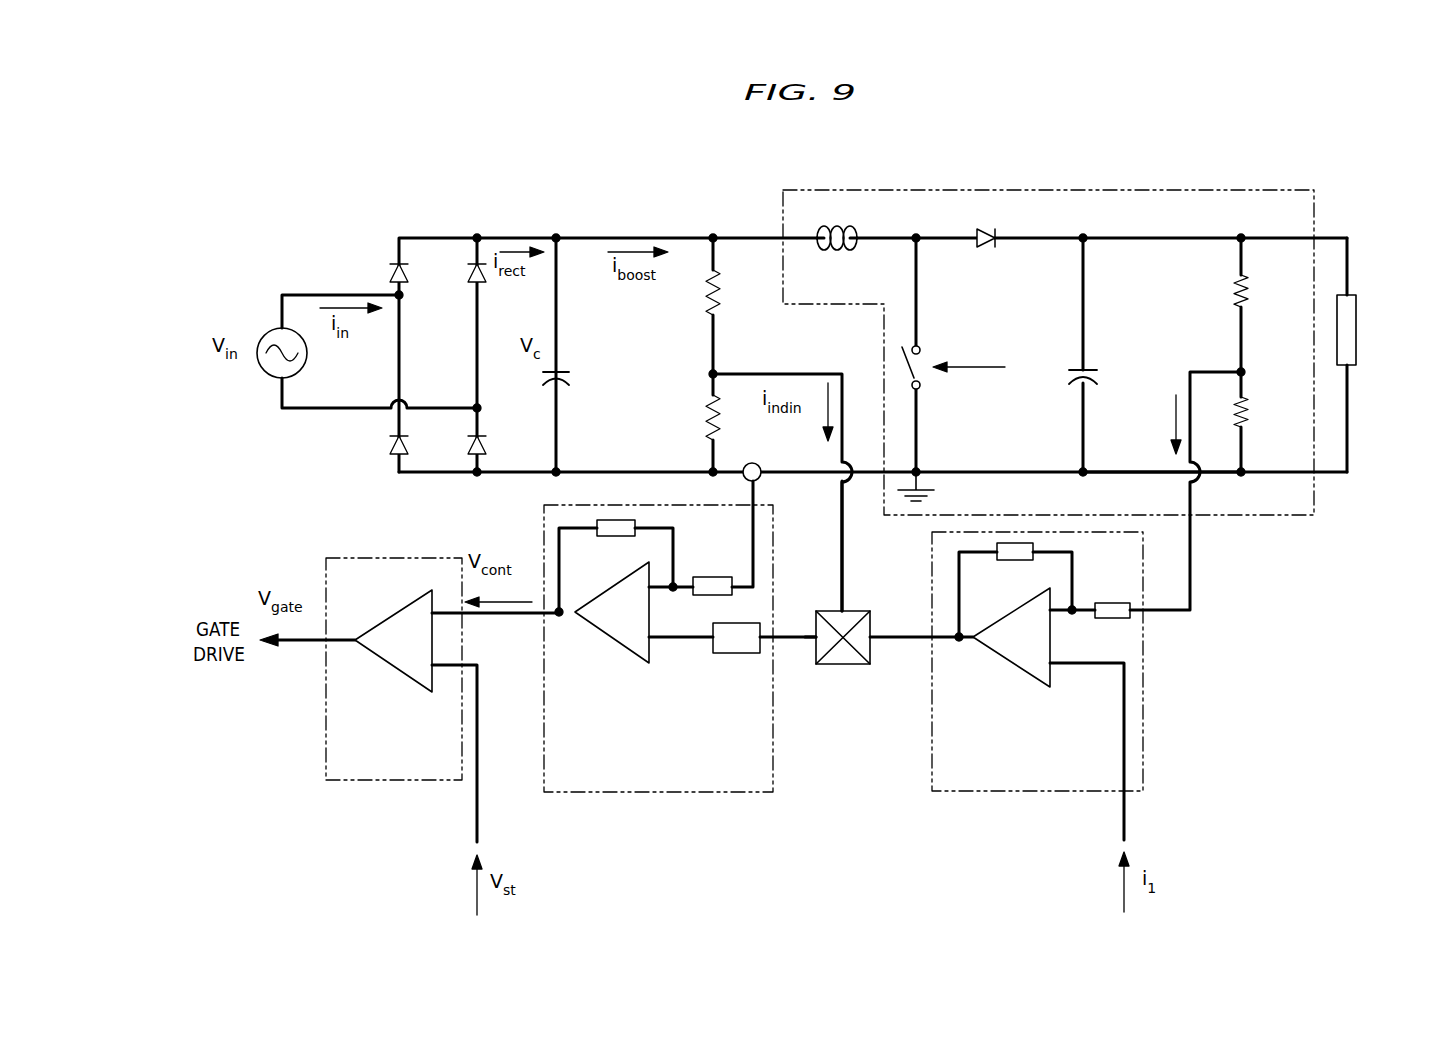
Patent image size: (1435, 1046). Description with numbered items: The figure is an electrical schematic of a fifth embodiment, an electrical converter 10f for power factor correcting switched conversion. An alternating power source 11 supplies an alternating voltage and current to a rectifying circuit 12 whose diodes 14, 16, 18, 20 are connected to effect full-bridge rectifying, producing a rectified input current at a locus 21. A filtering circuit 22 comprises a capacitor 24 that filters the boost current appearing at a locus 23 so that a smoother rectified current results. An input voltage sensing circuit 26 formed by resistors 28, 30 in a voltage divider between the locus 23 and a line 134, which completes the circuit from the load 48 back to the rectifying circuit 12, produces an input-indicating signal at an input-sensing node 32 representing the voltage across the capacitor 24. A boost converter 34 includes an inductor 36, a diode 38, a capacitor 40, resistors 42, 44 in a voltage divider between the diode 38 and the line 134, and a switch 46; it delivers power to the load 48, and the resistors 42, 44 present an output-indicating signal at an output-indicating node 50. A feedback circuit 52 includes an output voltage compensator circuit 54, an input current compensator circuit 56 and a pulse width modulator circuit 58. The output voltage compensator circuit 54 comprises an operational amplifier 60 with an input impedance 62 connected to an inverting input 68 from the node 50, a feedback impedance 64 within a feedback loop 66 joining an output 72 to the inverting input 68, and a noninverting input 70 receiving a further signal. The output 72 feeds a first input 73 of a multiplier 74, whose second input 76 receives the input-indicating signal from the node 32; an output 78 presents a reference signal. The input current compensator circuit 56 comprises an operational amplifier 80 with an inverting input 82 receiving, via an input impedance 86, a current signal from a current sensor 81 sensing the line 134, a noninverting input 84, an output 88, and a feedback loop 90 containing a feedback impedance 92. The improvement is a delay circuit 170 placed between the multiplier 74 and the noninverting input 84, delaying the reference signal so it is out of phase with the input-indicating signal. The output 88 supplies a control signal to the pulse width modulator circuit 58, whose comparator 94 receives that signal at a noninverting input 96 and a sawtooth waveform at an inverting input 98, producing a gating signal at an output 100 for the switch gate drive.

The electrical converter 10f is at (1283, 694).
The alternating power source 11 is at (262, 376).
The rectifying circuit 12 is at (436, 316).
The diode 14 is at (388, 274).
The diode 16 is at (468, 276).
The diode 18 is at (388, 445).
The diode 20 is at (488, 447).
The locus 21 is at (516, 236).
The filtering circuit 22 is at (572, 233).
The locus 23 is at (665, 236).
The capacitor 24 is at (570, 372).
The input voltage sensing circuit 26 is at (726, 233).
The resistor 28 is at (705, 296).
The resistor 30 is at (705, 422).
The input-sensing node 32 is at (838, 546).
The boost converter 34 is at (1065, 317).
The inductor 36 is at (840, 250).
The diode 38 is at (982, 252).
The capacitor 40 is at (1090, 372).
The resistor 42 is at (1232, 292).
The resistor 44 is at (1250, 414).
The switch 46 is at (924, 356).
The load 48 is at (1360, 340).
The output-indicating node 50 is at (1193, 536).
The feedback circuit 52 is at (1155, 730).
The output voltage compensator circuit 54 is at (1037, 696).
The input current compensator circuit 56 is at (680, 670).
The pulse width modulator circuit 58 is at (409, 682).
The operational amplifier 60 is at (1005, 668).
The input impedance 62 is at (1112, 600).
The feedback impedance 64 is at (1013, 565).
The feedback loop 66 is at (1050, 534).
The inverting input 68 is at (1058, 618).
The noninverting input 70 is at (1058, 668).
The output 72 is at (966, 645).
The first input 73 is at (876, 648).
The multiplier 74 is at (878, 611).
The second input 76 is at (836, 602).
The output 78 is at (808, 646).
The operational amplifier 80 is at (608, 645).
The current sensor 81 is at (762, 466).
The inverting input 82 is at (655, 592).
The noninverting input 84 is at (656, 645).
The input impedance 86 is at (702, 576).
The output 88 is at (564, 620).
The feedback loop 90 is at (675, 545).
The feedback impedance 92 is at (618, 538).
The comparator 94 is at (396, 672).
The noninverting input 96 is at (434, 606).
The inverting input 98 is at (456, 672).
The output 100 is at (352, 632).
The line 134 is at (512, 474).
The delay circuit 170 is at (740, 655).